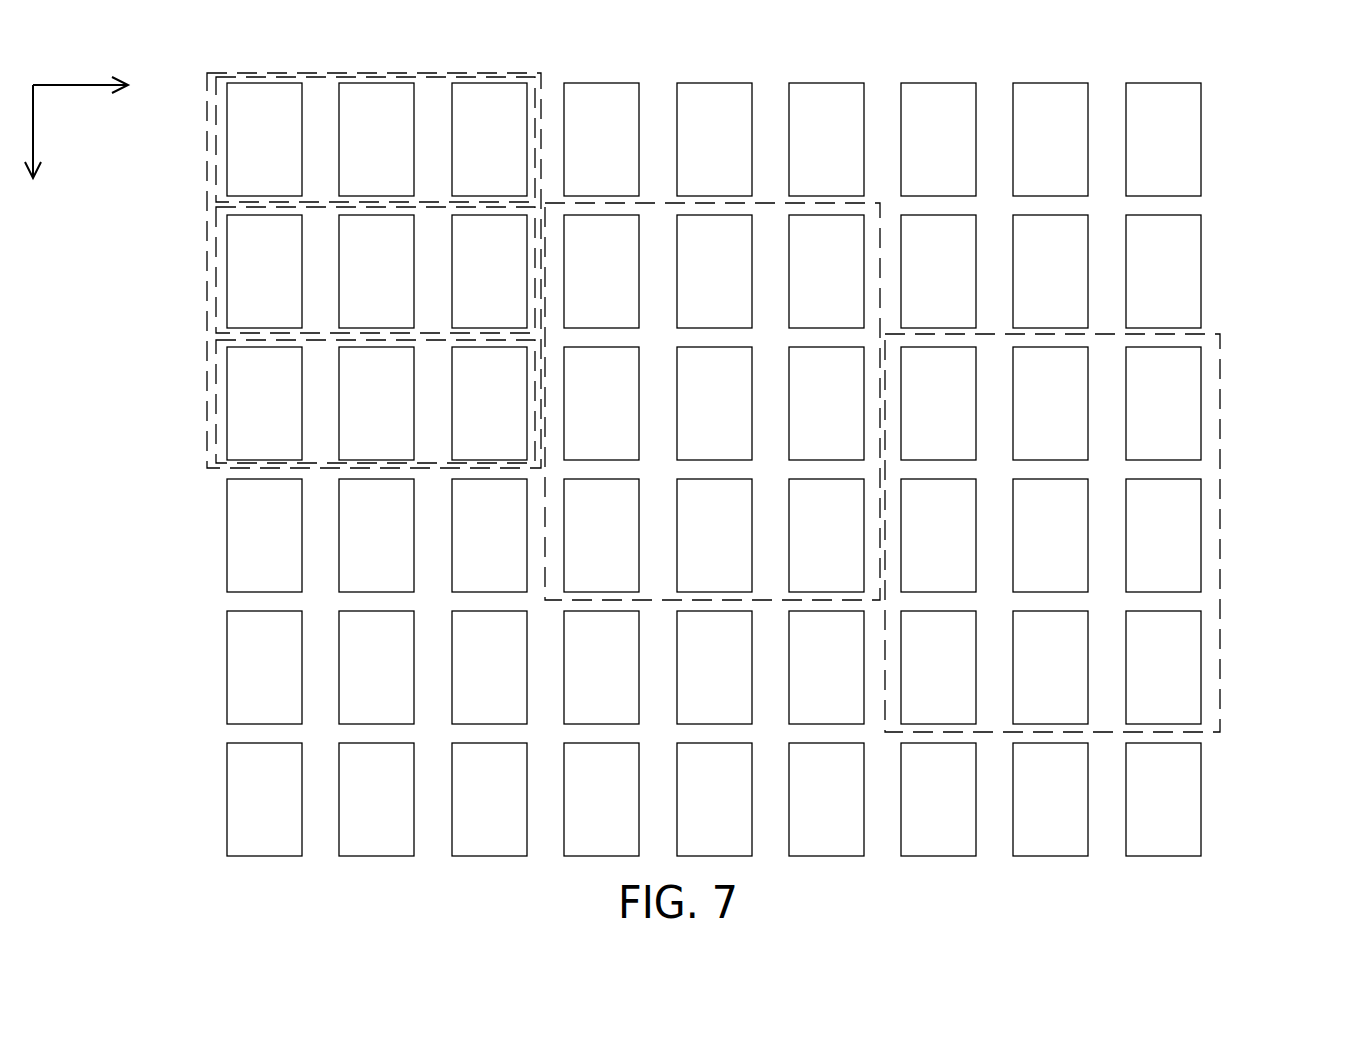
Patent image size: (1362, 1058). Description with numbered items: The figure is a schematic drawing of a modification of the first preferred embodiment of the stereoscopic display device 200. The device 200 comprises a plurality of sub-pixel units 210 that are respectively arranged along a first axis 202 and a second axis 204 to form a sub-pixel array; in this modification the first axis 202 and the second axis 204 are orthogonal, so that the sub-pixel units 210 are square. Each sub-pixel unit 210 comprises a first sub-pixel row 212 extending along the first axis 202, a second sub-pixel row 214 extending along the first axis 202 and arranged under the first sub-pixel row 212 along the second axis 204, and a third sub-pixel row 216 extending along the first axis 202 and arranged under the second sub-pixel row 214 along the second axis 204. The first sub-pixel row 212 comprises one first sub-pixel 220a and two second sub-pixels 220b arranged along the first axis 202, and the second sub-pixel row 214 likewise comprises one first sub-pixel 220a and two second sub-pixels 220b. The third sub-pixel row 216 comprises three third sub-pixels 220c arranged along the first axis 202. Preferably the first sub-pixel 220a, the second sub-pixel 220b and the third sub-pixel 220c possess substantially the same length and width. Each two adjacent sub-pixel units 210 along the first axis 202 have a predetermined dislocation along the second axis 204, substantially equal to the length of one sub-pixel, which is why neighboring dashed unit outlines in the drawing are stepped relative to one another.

The stereoscopic display device 200 is at (1220, 123).
The first axis 202 is at (104, 83).
The second axis 204 is at (35, 150).
The sub-pixel unit 210 is at (206, 318).
The first sub-pixel row 212 is at (214, 147).
The second sub-pixel row 214 is at (214, 256).
The third sub-pixel row 216 is at (214, 410).
The first sub-pixel 220a is at (601, 469).
The second sub-pixel 220b is at (770, 469).
The third sub-pixel 220c is at (714, 469).